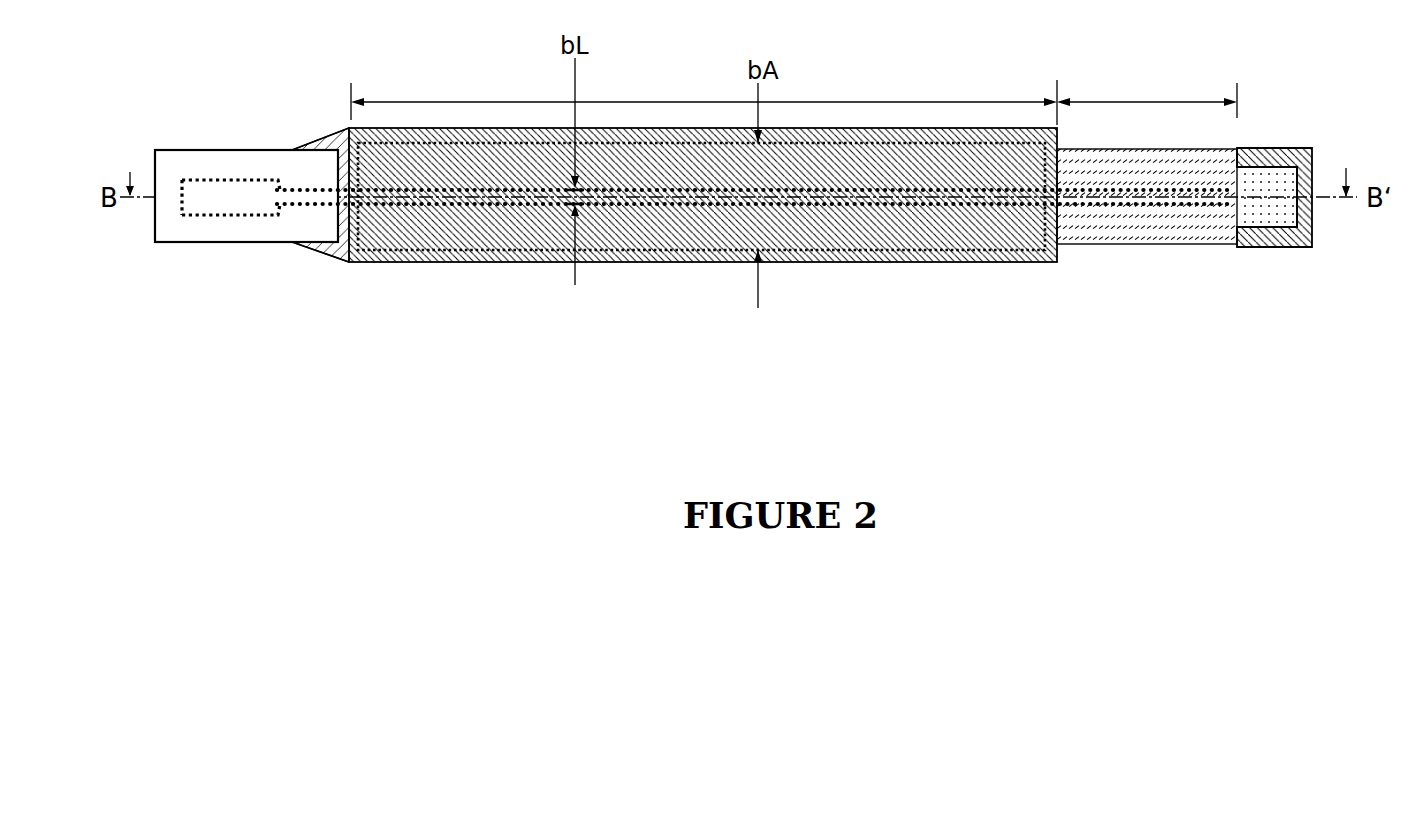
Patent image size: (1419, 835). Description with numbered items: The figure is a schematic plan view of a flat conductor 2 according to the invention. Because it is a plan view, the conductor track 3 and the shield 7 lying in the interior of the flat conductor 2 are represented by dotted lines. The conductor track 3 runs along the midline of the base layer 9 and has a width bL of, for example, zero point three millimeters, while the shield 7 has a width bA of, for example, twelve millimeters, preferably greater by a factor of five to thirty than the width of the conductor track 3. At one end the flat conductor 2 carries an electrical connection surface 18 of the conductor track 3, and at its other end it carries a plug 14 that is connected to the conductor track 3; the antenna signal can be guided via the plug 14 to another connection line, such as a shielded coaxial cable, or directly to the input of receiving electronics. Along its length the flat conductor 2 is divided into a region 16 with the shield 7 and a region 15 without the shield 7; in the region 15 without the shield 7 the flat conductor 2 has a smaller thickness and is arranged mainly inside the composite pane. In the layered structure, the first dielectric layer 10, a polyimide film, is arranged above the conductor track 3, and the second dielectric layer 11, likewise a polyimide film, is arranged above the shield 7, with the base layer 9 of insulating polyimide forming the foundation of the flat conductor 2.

The flat conductor 2 is at (227, 197).
The plug 14 is at (185, 242).
The conductor track 3 is at (410, 205).
The shield 7 is at (460, 248).
The second dielectric layer 11 is at (950, 228).
The first dielectric layer 10 is at (1127, 232).
The electrical connection surface 18 is at (1248, 215).
The base layer 9 is at (1288, 243).
The region with the shield 16 is at (704, 97).
The region without the shield 15 is at (1147, 93).